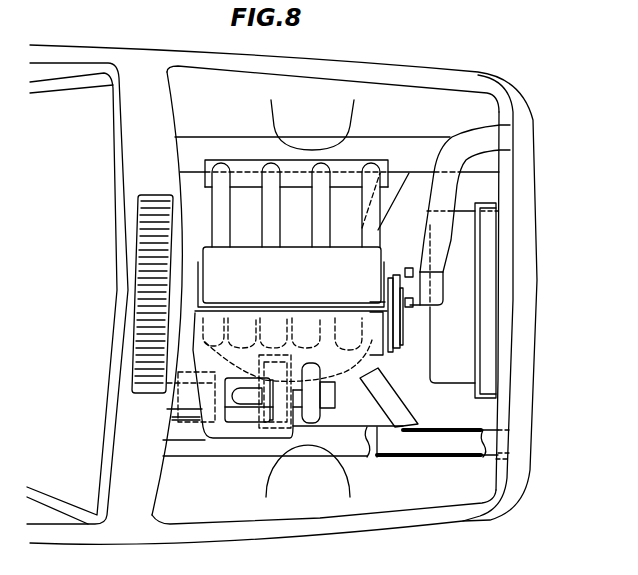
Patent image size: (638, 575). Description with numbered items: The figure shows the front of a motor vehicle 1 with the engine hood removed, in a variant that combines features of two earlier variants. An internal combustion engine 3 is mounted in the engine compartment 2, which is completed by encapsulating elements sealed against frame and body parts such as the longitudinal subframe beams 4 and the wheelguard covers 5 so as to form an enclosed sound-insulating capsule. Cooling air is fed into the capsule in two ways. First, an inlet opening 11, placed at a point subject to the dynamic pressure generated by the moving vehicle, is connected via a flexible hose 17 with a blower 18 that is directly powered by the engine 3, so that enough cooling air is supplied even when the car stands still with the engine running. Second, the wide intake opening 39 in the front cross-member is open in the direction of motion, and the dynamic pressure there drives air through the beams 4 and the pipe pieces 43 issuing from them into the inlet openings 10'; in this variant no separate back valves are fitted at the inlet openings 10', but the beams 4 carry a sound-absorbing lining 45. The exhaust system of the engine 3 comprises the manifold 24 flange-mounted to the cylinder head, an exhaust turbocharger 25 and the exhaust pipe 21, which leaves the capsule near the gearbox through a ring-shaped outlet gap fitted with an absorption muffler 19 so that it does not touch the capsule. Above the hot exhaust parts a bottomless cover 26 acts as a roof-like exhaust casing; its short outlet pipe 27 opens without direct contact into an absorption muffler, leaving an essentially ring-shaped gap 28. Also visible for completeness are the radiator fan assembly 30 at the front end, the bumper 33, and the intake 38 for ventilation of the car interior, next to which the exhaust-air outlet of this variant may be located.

The motor vehicle 1 is at (57, 43).
The engine compartment 2 is at (441, 412).
The internal combustion engine 3 is at (286, 283).
The longitudinal subframe beams 4 is at (396, 134).
The wheelguard covers 5 is at (412, 102).
The inlet openings 10' is at (368, 275).
The inlet opening 11 is at (500, 137).
The flexible hose 17 is at (440, 235).
The blower 18 is at (409, 312).
The absorption muffler 19 is at (186, 414).
The exhaust pipe 21 is at (178, 392).
The manifold 24 is at (236, 317).
The exhaust turbocharger 25 is at (322, 417).
The cover 26 is at (212, 435).
The outlet pipe 27 is at (245, 400).
The ring-shaped gap 28 is at (258, 418).
The radiator fan assembly 30 is at (474, 332).
The bumper 33 is at (530, 283).
The intake 38 is at (158, 215).
The intake opening 39 is at (490, 446).
The pipe pieces 43 is at (388, 199).
The sound-absorbing lining 45 is at (431, 457).